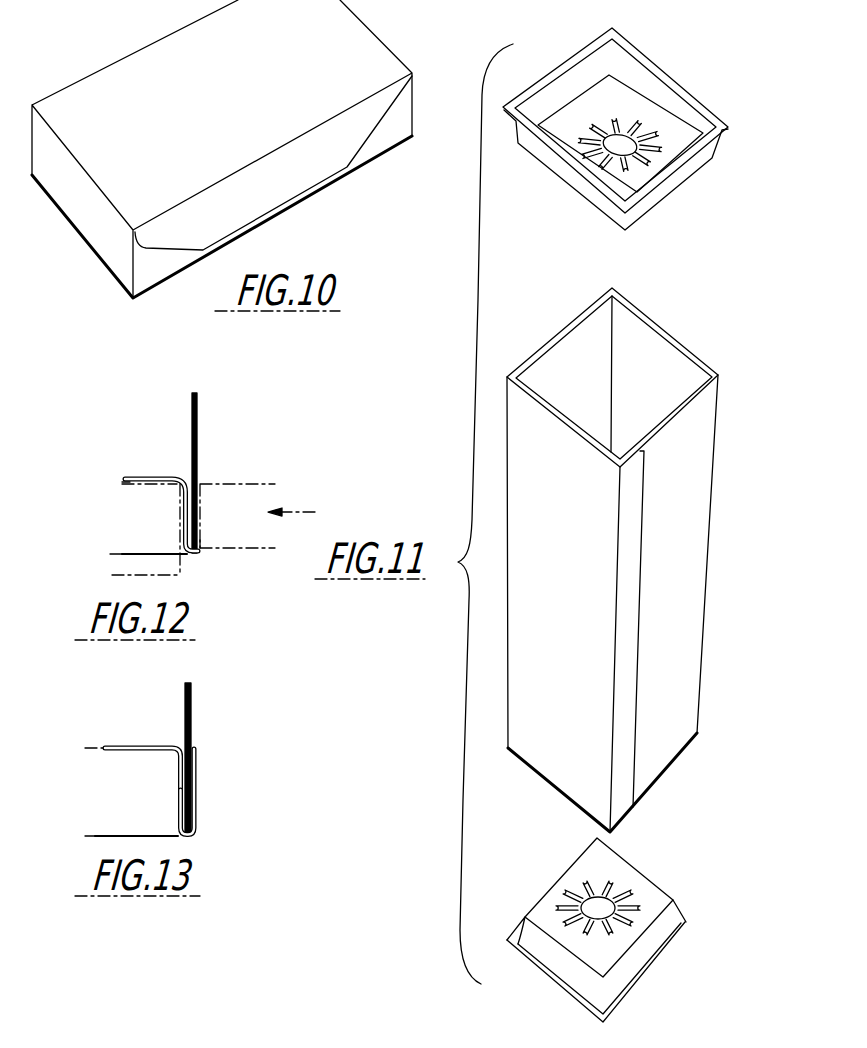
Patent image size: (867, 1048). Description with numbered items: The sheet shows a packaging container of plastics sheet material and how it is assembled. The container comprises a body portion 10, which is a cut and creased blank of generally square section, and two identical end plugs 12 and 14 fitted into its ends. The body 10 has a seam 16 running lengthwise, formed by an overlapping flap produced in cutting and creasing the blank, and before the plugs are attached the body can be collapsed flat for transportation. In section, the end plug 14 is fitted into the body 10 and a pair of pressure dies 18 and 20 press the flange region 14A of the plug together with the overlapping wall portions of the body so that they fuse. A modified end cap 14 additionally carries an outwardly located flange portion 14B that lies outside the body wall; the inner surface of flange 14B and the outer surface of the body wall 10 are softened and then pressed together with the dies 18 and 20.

In FIG. 11, the body portion 10 is at (508, 735).
In FIG. 12, the body portion 10 is at (191, 418).
In FIG. 13, the body portion 10 is at (192, 713).
In FIG. 11, the end plug 12 is at (584, 207).
In FIG. 11, the end plug 14 is at (548, 887).
In FIG. 12, the end plug 14 is at (143, 477).
In FIG. 13, the end panel of closure cap 14A is at (128, 745).
In FIG. 13, the additional outwardly located flange portion 14B is at (197, 818).
In FIG. 11, the seam 16 is at (632, 758).
In FIG. 12, the pressure die 18 is at (143, 528).
In FIG. 12, the pressure die 20 is at (236, 531).